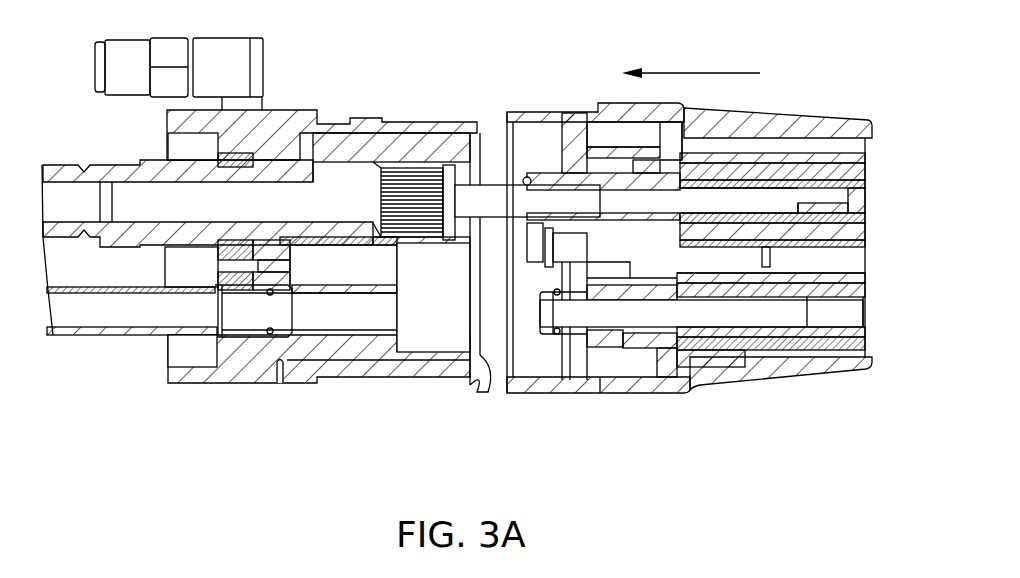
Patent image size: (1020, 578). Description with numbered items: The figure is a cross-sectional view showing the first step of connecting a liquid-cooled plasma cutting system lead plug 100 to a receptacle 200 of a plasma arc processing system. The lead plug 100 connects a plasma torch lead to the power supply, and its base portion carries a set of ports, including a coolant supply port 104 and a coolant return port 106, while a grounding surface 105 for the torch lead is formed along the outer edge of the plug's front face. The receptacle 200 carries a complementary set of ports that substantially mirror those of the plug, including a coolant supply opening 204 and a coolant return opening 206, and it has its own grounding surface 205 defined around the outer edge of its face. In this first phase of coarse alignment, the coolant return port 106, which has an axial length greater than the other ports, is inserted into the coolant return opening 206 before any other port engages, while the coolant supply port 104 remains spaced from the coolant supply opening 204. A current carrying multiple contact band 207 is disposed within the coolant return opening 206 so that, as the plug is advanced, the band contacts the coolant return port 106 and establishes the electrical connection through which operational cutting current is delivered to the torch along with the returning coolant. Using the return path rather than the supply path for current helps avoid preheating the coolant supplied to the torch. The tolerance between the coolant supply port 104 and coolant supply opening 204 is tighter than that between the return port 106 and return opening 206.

The lead plug 100 is at (698, 235).
The coolant supply port 104 is at (578, 313).
The electrical grounding surface 105 is at (662, 360).
The coolant return port 106 is at (505, 207).
The receptacle 200 is at (266, 249).
The coolant supply opening 204 is at (247, 318).
The grounding surface 205 is at (488, 378).
The coolant return opening 206 is at (337, 197).
The current carrying multiple contact band 207 is at (437, 192).